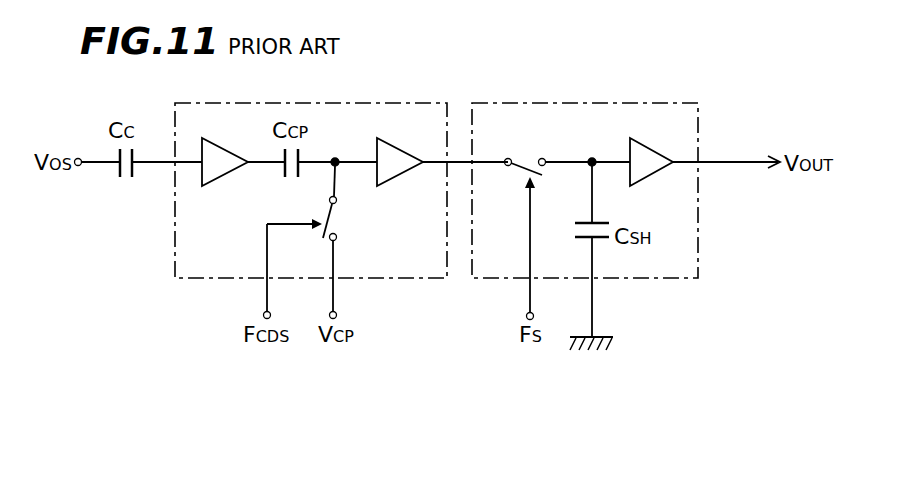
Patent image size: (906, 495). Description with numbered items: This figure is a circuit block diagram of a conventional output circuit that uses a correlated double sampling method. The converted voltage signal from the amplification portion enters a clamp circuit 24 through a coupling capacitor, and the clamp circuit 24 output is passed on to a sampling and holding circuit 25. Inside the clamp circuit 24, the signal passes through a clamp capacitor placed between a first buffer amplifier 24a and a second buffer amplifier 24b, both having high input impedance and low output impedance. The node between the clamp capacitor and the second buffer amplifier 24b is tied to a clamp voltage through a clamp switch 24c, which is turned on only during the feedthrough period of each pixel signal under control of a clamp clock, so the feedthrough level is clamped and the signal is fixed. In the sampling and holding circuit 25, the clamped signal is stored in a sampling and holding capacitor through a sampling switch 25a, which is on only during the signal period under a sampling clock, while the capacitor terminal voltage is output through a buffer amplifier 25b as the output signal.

The clamp circuit 24 is at (316, 103).
The first buffer amplifier 24a is at (224, 136).
The second buffer amplifier 24b is at (398, 148).
The clamp switch 24c is at (333, 222).
The sampling and holding circuit 25 is at (567, 103).
The sampling switch 25a is at (531, 158).
The buffer amplifier 25b is at (660, 137).